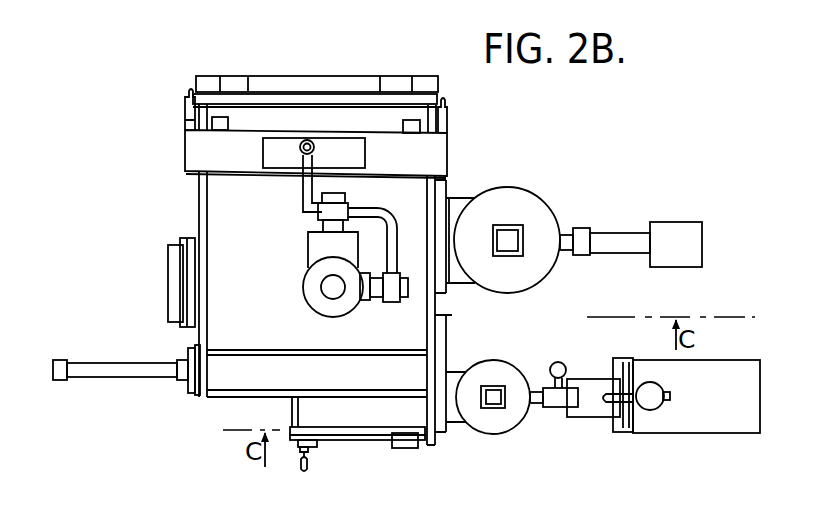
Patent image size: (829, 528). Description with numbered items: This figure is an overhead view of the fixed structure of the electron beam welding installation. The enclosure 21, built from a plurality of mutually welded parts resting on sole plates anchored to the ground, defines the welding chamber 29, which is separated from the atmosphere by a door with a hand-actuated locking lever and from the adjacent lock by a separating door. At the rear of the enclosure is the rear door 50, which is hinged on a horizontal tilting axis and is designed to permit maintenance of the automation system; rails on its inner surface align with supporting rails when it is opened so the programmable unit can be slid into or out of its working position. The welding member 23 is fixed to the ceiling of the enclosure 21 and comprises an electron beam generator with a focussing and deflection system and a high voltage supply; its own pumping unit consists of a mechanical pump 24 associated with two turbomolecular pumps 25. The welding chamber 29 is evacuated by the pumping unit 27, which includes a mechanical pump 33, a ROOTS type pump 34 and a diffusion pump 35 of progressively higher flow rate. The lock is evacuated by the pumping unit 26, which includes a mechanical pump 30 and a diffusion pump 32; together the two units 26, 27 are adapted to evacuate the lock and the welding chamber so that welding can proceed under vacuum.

The rear door 50 is at (325, 103).
The mechanical pump 24 is at (355, 150).
The enclosure 21 is at (198, 207).
The welding chamber 29 is at (228, 235).
The welding member 23 is at (313, 272).
The turbomolecular pumps 25 is at (390, 297).
The pumping unit 27 is at (537, 181).
The diffusion pump 35 is at (533, 212).
The ROOTS type pump 34 is at (611, 242).
The mechanical pump 33 is at (664, 238).
The pumping unit 26 is at (475, 435).
The diffusion pump 32 is at (513, 400).
The mechanical pump 30 is at (697, 408).